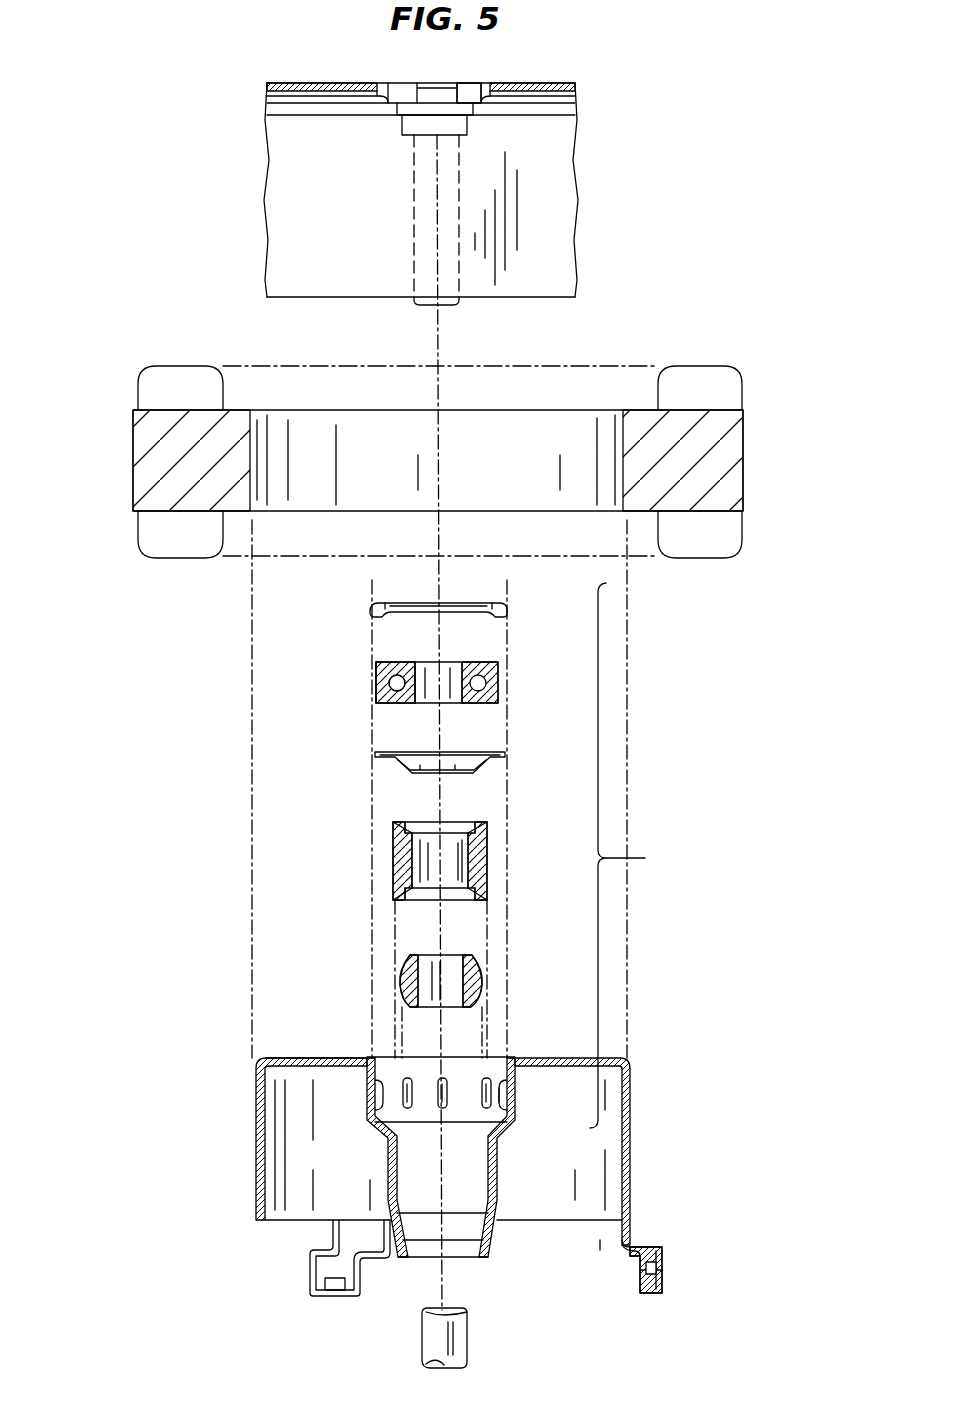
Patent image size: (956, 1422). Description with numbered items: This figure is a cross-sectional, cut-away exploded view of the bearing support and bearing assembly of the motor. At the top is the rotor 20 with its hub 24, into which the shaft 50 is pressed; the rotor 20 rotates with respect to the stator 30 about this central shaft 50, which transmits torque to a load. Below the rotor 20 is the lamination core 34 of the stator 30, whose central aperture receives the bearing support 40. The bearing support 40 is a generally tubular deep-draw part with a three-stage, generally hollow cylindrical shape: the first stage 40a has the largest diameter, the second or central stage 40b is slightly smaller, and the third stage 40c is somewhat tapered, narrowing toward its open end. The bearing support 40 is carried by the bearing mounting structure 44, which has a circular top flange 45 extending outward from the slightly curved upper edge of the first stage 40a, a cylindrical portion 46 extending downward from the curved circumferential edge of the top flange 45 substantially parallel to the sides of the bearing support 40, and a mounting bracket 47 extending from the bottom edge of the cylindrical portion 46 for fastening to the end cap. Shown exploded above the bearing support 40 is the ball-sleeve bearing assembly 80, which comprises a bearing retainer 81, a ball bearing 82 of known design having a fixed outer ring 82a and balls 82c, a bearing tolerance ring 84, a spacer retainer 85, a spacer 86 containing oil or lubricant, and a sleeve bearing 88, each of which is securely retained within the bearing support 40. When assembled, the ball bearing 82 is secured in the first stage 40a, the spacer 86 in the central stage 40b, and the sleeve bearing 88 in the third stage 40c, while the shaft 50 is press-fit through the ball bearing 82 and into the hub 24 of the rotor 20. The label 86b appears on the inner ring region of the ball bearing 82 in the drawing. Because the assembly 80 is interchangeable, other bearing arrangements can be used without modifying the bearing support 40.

The rotor 20 is at (461, 170).
The hub 24 is at (469, 83).
The shaft 50 is at (412, 185).
The stator 30 is at (393, 459).
The lamination core 34 is at (133, 478).
The ball-sleeve bearing assembly 80 is at (496, 851).
The bearing retainer 81 is at (503, 606).
The ball bearing 82 is at (436, 682).
The outer ring 82a is at (376, 682).
The balls 82c is at (395, 669).
The inner race 86b is at (416, 688).
The spacer retainer 85 is at (504, 752).
The spacer 86 is at (487, 850).
The sleeve bearing 88 is at (482, 973).
The bearing mounting structure 44 is at (418, 1152).
The circular top flange 45 is at (308, 1058).
The cylindrical portion 46 is at (256, 1097).
The mounting bracket 47 is at (618, 1233).
The bearing support 40 is at (444, 1152).
The first stage 40a is at (390, 1056).
The second stage 40b is at (392, 1190).
The third stage 40c is at (418, 1258).
The bearing tolerance ring 84 is at (503, 1120).